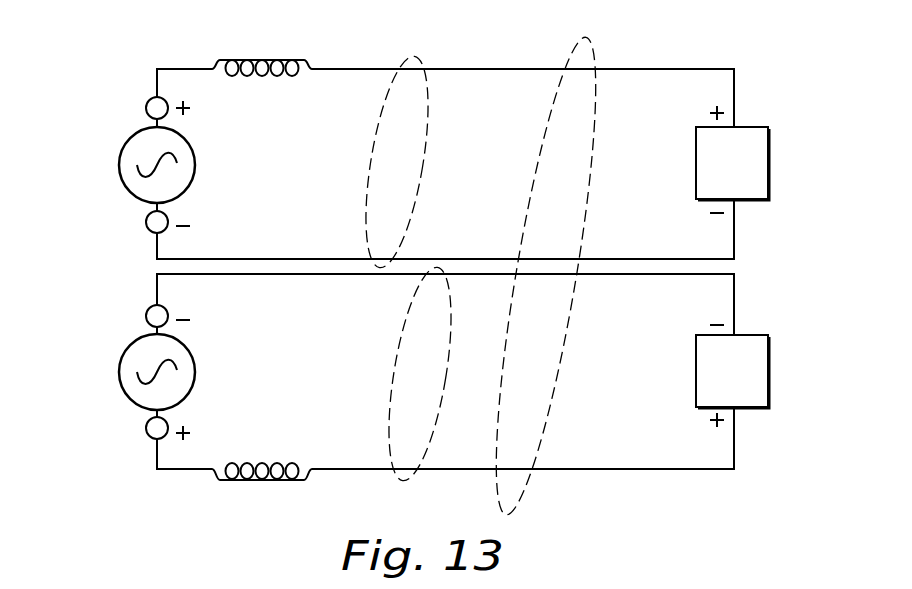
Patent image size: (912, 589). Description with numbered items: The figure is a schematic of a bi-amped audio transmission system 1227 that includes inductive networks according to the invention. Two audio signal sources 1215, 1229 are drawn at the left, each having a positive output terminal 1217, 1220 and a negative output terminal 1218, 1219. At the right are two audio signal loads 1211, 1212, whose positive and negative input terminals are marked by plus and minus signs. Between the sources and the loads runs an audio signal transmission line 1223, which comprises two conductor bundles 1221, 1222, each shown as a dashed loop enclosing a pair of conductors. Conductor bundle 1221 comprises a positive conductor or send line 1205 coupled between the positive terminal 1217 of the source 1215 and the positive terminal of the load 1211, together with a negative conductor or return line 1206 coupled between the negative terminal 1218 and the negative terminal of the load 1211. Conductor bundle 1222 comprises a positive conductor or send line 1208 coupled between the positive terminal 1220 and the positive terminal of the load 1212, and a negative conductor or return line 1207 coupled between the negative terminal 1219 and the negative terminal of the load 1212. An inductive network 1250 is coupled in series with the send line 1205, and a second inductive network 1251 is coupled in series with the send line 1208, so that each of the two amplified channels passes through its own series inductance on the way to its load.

The positive conductor or send line 1205 is at (618, 70).
The negative conductor or return line 1206 is at (481, 258).
The negative conductor or return line 1207 is at (598, 277).
The positive conductor or send line 1208 is at (636, 468).
The audio signal load 1211 is at (746, 200).
The audio signal load 1212 is at (746, 408).
The audio signal source 1215 is at (133, 201).
The positive output terminal 1217 is at (147, 107).
The negative output terminal 1218 is at (147, 228).
The negative output terminal 1219 is at (147, 314).
The positive output terminal 1220 is at (147, 436).
The conductor bundle 1221 is at (388, 107).
The conductor bundle 1222 is at (414, 304).
The audio signal transmission line 1223 is at (571, 55).
The bi-amped audio transmission system 1227 is at (752, 92).
The audio signal source 1229 is at (133, 408).
The inductive network 1250 is at (258, 58).
The inductive network 1251 is at (257, 481).